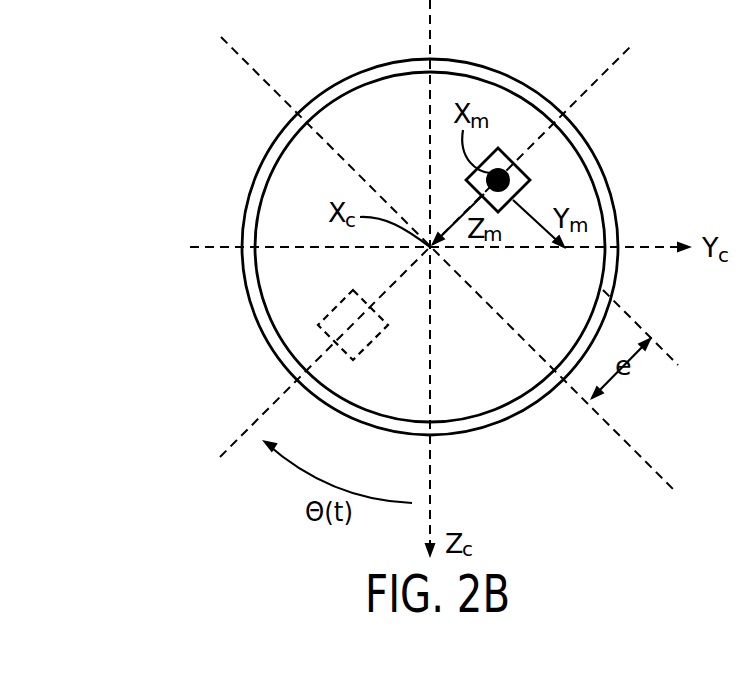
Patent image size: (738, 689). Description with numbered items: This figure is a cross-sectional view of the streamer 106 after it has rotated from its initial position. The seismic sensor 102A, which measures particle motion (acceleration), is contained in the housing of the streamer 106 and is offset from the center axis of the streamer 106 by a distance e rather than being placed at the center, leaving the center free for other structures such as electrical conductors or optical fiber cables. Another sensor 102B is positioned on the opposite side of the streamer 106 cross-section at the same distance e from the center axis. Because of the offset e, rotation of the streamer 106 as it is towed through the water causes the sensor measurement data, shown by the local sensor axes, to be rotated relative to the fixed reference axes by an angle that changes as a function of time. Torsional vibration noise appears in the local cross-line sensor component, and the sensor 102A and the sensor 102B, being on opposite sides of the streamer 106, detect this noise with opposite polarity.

The seismic sensor 102A is at (508, 203).
The sensor 102B is at (373, 343).
The streamer 106 is at (467, 433).